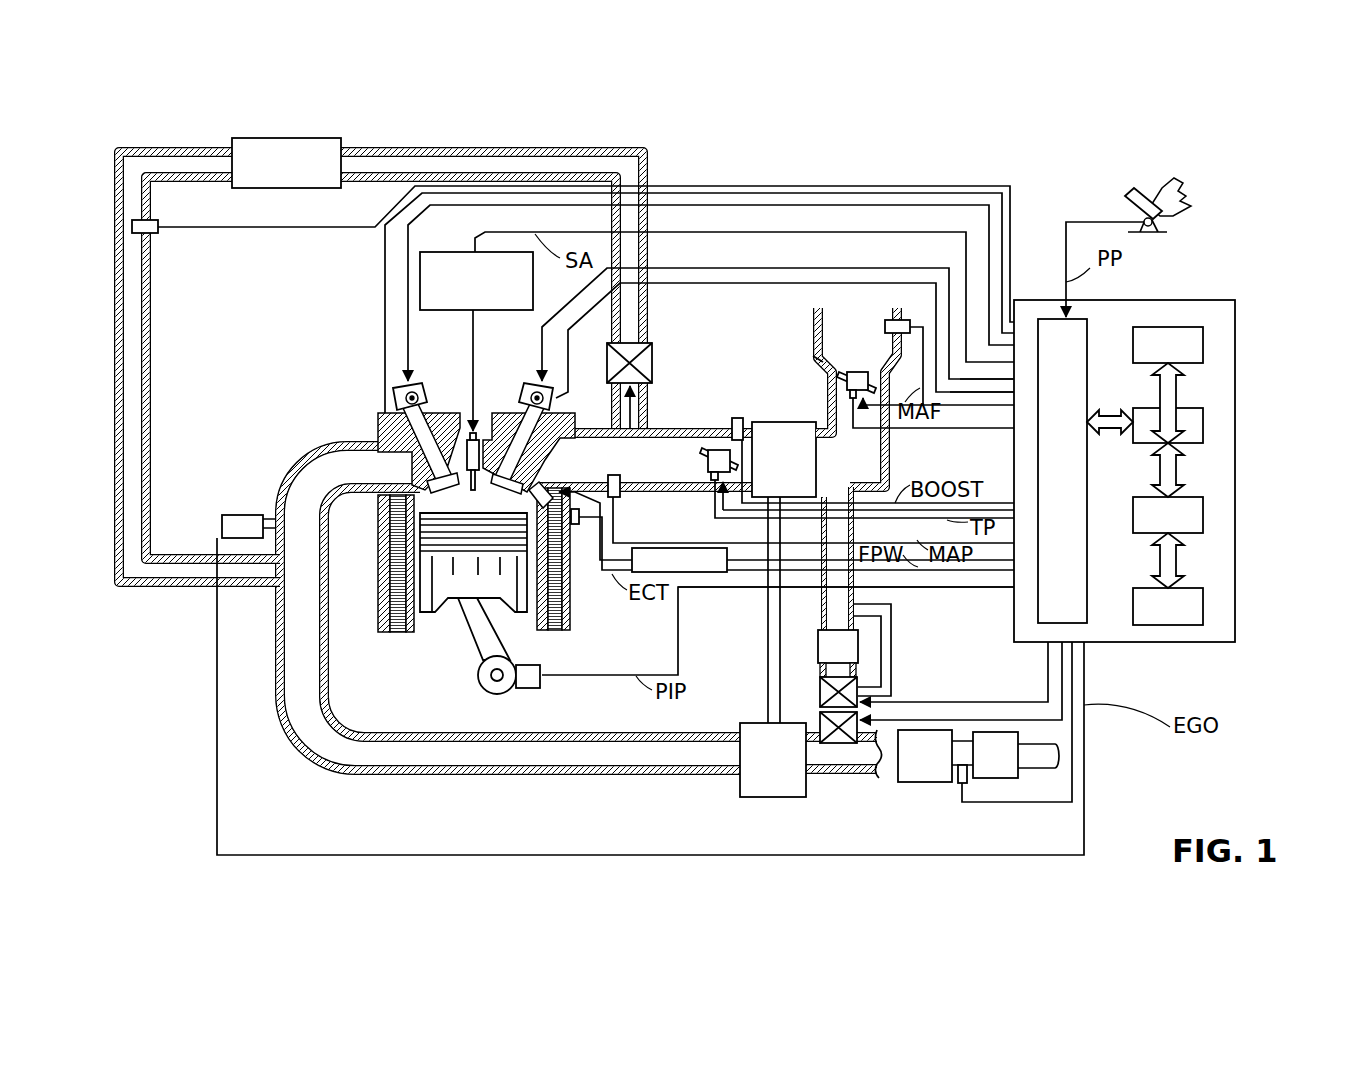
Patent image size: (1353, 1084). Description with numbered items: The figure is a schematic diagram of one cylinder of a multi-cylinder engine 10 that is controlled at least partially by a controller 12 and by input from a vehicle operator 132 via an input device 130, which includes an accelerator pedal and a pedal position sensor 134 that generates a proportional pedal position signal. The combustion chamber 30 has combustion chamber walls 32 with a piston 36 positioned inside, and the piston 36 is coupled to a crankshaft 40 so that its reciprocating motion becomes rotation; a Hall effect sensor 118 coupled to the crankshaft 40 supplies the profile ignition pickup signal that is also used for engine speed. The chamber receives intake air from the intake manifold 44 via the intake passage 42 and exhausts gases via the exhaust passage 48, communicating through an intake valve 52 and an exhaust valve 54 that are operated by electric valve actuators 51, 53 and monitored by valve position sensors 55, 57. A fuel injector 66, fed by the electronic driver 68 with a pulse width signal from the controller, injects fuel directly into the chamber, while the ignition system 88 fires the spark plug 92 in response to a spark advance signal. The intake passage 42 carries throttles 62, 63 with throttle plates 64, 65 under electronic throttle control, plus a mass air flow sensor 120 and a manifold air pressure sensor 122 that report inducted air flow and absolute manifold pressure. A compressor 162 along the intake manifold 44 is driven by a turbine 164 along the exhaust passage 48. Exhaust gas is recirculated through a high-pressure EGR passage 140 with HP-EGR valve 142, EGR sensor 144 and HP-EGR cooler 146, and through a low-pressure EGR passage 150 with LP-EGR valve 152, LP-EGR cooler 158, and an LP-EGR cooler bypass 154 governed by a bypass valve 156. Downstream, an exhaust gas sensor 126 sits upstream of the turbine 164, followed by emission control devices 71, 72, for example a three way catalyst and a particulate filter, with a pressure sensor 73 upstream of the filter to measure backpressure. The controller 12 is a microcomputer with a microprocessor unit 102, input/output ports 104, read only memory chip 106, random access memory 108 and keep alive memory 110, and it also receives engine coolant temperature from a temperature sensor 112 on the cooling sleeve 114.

The engine 10 is at (316, 368).
The controller 12 is at (1173, 457).
The combustion chamber 30 is at (380, 598).
The combustion chamber walls 32 is at (420, 620).
The piston 36 is at (460, 590).
The crankshaft 40 is at (485, 693).
The intake passage 42 is at (856, 397).
The intake manifold 44 is at (646, 460).
The exhaust passage 48 is at (510, 608).
The electric valve actuator 51 is at (530, 385).
The intake valve 52 is at (520, 478).
The electric valve actuator 53 is at (420, 385).
The exhaust valve 54 is at (425, 465).
The valve position sensor 55 is at (555, 402).
The valve position sensor 57 is at (398, 395).
The throttle 62 is at (703, 450).
The throttle 63 is at (817, 357).
The throttle plate 64 is at (708, 456).
The throttle plate 65 is at (840, 378).
The fuel injector 66 is at (527, 500).
The electronic driver 68 is at (736, 556).
The emission control device 71 is at (935, 756).
The emission control device 72 is at (1016, 755).
The pressure sensor 73 is at (960, 787).
The ignition system 88 is at (435, 252).
The spark plug 92 is at (478, 440).
The microprocessor unit 102 is at (1205, 425).
The input/output ports 104 is at (1090, 325).
The read only memory chip 106 is at (1205, 345).
The random access memory 108 is at (1205, 512).
The keep alive memory 110 is at (1205, 600).
The temperature sensor 112 is at (575, 524).
The cooling sleeve 114 is at (565, 600).
The Hall effect sensor 118 is at (532, 690).
The mass air flow sensor 120 is at (912, 312).
The manifold air pressure sensor 122 is at (609, 478).
The exhaust gas sensor 126 is at (222, 516).
The input device 130 is at (1185, 236).
The vehicle operator 132 is at (1190, 192).
The pedal position sensor 134 is at (1162, 222).
The high-pressure EGR passage 140 is at (545, 150).
The HP-EGR valve 142 is at (652, 370).
The EGR sensor 144 is at (155, 233).
The HP-EGR cooler 146 is at (286, 163).
The low-pressure EGR passage 150 is at (856, 604).
The LP-EGR valve 152 is at (818, 725).
The LP-EGR cooler bypass 154 is at (884, 666).
The LP-EGR cooler bypass valve 156 is at (818, 692).
The LP-EGR cooler 158 is at (838, 653).
The compressor 162 is at (784, 572).
The turbine 164 is at (811, 760).